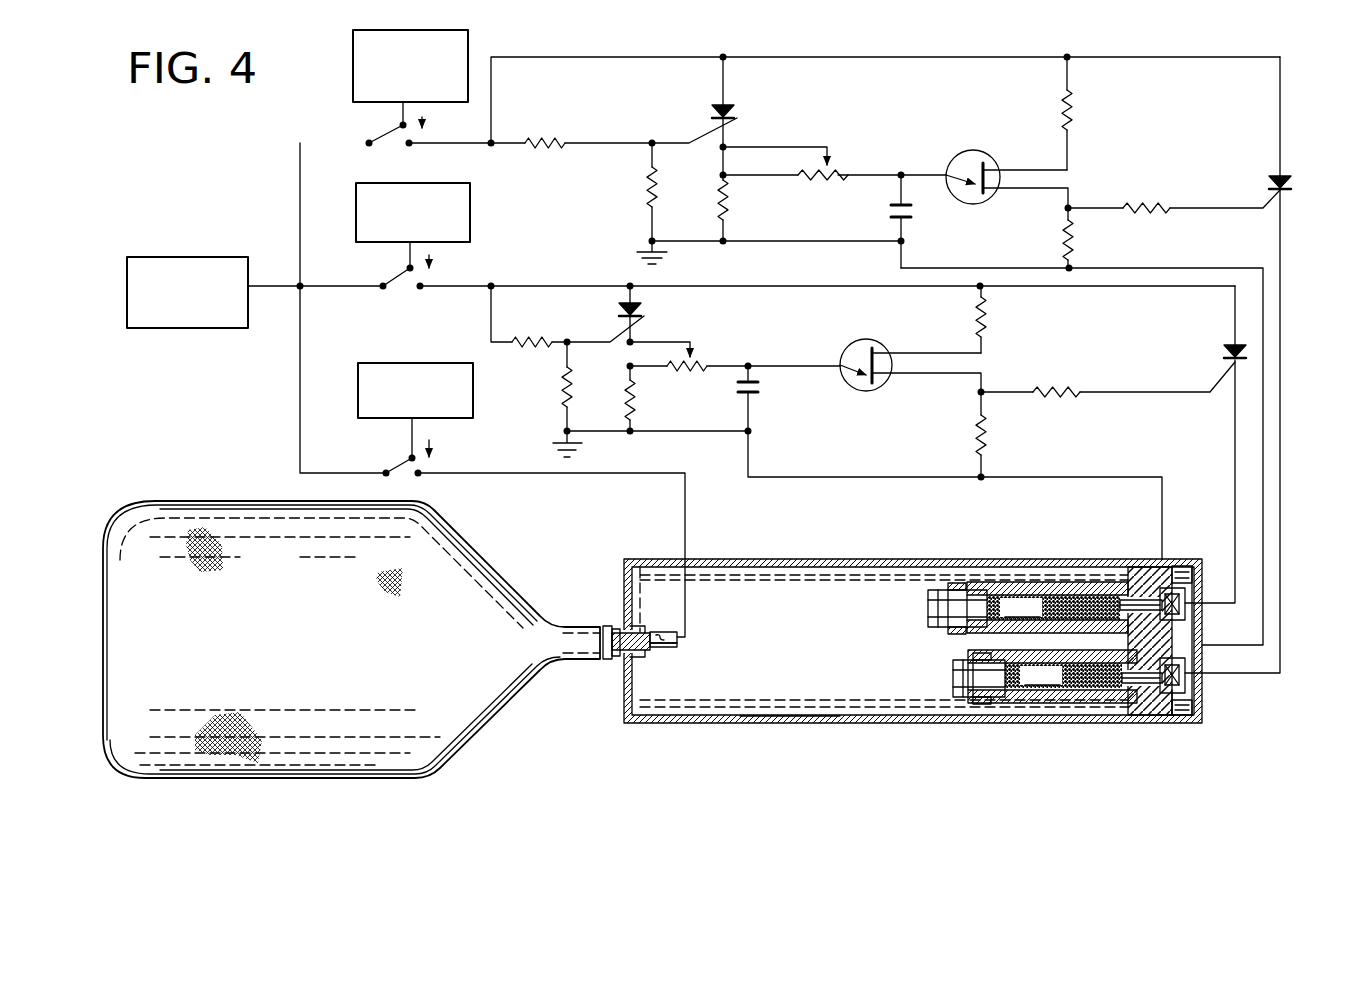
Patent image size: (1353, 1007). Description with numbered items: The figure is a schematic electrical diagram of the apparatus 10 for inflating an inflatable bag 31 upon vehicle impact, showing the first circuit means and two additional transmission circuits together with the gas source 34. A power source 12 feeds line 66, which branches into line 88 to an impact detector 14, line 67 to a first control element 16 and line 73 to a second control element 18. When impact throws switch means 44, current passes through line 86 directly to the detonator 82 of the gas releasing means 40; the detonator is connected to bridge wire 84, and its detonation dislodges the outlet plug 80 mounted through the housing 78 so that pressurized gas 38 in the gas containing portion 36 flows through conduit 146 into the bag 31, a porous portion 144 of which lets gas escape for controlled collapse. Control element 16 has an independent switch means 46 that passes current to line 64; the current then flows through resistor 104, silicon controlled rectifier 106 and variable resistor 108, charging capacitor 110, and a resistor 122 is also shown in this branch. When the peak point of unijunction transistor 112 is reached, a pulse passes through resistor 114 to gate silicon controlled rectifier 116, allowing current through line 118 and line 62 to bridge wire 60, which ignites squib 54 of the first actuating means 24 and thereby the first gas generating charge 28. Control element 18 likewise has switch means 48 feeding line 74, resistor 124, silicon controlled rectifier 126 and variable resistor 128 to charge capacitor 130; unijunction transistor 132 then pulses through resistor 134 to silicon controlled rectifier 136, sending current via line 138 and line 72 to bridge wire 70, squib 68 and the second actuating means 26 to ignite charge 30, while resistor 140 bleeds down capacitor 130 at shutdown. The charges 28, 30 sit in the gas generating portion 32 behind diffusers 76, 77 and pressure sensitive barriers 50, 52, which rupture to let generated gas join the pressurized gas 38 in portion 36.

The apparatus 10 is at (240, 133).
The power source 12 is at (178, 329).
The impact detector 14 is at (455, 418).
The first control element 16 is at (356, 200).
The second control element 18 is at (353, 88).
The first actuating means 24 is at (1145, 585).
The second actuating means 26 is at (1165, 700).
The first gas generating charge 28 is at (1053, 607).
The second gas generating charge 30 is at (1063, 675).
The inflatable bag 31 is at (347, 772).
The gas generating portion 32 is at (1178, 560).
The gas source 34 is at (680, 755).
The gas containing portion 36 is at (792, 720).
The pressurized gas 38 is at (845, 682).
The gas releasing means 40 is at (660, 667).
The switch means 44 is at (393, 470).
The switch means 46 is at (390, 280).
The switch means 48 is at (375, 140).
The pressure sensitive barrier 50 is at (927, 607).
The pressure sensitive barrier 52 is at (957, 677).
The squib 54 is at (1122, 604).
The bridge wire 60 is at (1182, 606).
The line 62 is at (1235, 437).
The line 64 is at (448, 290).
The line 66 is at (272, 292).
The line 67 is at (332, 292).
The squib 68 is at (1123, 681).
The bridge wire 70 is at (1183, 677).
The line 72 is at (1282, 482).
The line 73 is at (300, 210).
The line 74 is at (477, 147).
The diffuser 76 is at (967, 636).
The diffuser 77 is at (1008, 680).
The housing 78 is at (828, 555).
The outlet plug 80 is at (627, 634).
The detonator 82 is at (657, 630).
The bridge wire 84 is at (660, 647).
The line 86 is at (686, 504).
The line 88 is at (300, 393).
The resistor 104 is at (537, 340).
The silicon controlled rectifier 106 is at (642, 309).
The variable resistor 108 is at (705, 364).
The capacitor 110 is at (760, 390).
The unijunction transistor 112 is at (885, 348).
The resistor 114 is at (1060, 390).
The silicon controlled rectifier 116 is at (1230, 352).
The line 118 is at (553, 284).
The resistor 122 is at (560, 388).
The resistor 124 is at (556, 140).
The silicon controlled rectifier 126 is at (735, 108).
The variable resistor 128 is at (822, 185).
The capacitor 130 is at (912, 216).
The unijunction transistor 132 is at (983, 162).
The resistor 134 is at (1157, 206).
The silicon controlled rectifier 136 is at (1275, 175).
The line 138 is at (625, 57).
The resistor 140 is at (736, 200).
The porous portion 144 is at (237, 742).
The conduit 146 is at (605, 654).